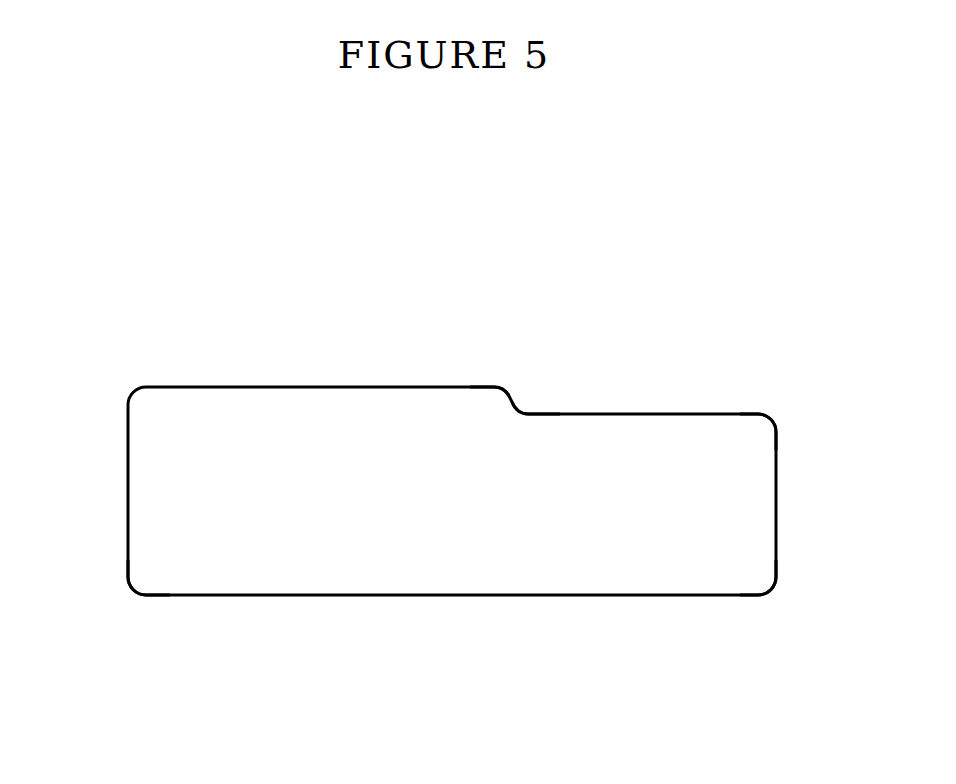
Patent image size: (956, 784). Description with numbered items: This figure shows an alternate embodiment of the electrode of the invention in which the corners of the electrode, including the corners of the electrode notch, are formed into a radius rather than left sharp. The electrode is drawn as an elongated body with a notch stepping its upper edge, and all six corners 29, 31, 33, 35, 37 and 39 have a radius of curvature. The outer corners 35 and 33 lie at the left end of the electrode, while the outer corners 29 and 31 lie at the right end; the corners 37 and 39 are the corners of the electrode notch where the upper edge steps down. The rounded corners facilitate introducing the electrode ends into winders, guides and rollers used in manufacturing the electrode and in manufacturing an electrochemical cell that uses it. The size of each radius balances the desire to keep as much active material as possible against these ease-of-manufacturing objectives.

The corner 29 is at (772, 420).
The corner 31 is at (772, 590).
The corner 33 is at (132, 591).
The corner 35 is at (130, 391).
The corner 37 is at (502, 387).
The corner 39 is at (522, 412).